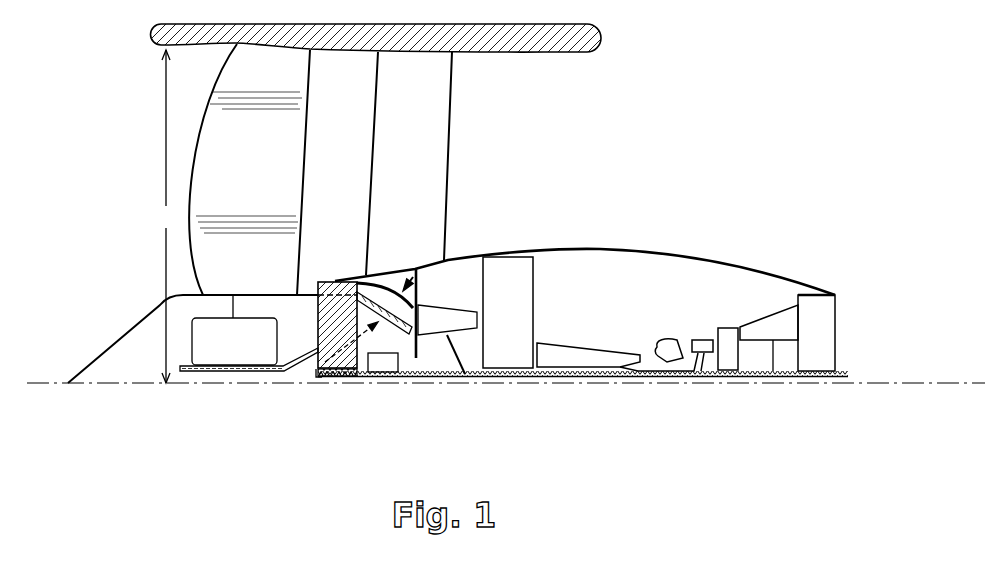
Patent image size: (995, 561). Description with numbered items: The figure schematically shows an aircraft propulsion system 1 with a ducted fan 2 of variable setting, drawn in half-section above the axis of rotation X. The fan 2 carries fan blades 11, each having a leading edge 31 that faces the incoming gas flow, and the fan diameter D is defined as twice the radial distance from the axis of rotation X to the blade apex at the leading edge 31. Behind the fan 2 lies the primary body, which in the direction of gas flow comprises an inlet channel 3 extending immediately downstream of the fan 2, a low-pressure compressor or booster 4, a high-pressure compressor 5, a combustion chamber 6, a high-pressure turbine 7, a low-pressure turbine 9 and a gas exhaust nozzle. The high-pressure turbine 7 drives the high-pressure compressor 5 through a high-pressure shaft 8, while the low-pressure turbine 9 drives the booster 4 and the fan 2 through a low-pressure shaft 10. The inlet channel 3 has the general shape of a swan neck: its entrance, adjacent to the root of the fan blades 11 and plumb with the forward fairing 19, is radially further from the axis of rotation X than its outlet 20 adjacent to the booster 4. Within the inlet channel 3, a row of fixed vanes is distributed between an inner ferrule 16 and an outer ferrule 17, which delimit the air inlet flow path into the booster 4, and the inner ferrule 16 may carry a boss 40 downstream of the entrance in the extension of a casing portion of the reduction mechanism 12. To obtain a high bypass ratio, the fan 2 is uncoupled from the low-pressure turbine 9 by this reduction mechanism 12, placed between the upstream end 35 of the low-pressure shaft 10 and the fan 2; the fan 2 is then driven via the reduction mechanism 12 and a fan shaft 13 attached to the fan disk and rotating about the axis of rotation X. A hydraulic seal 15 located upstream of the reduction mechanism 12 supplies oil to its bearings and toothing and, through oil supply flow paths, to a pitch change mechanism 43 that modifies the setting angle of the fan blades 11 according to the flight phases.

The propulsion system 1 is at (719, 244).
The fan 2 is at (147, 258).
The inlet channel 3 is at (422, 277).
The low-pressure compressor 4 is at (447, 320).
The high-pressure compressor 5 is at (620, 357).
The combustion chamber 6 is at (662, 362).
The high-pressure turbine 7 is at (710, 353).
The high-pressure shaft 8 is at (451, 375).
The low-pressure turbine 9 is at (787, 333).
The low-pressure shaft 10 is at (430, 377).
The fan blade 11 is at (207, 169).
The reduction mechanism 12 is at (316, 366).
The fan shaft 13 is at (208, 372).
The hydraulic seal 15 is at (387, 372).
The inner ferrule 16 is at (347, 376).
The outer ferrule 17 is at (430, 257).
The forward fairing 19 is at (347, 282).
The outlet 20 is at (422, 306).
The leading edge 31 is at (200, 103).
The upstream end 35 is at (318, 377).
The boss 40 is at (384, 306).
The pitch change mechanism 43 is at (234, 330).
The fan diameter D is at (166, 216).
The axis of rotation X is at (43, 386).